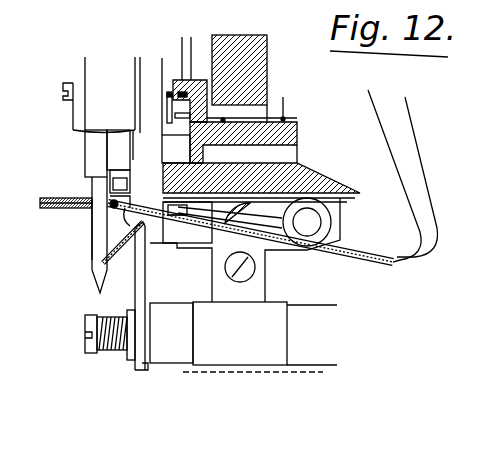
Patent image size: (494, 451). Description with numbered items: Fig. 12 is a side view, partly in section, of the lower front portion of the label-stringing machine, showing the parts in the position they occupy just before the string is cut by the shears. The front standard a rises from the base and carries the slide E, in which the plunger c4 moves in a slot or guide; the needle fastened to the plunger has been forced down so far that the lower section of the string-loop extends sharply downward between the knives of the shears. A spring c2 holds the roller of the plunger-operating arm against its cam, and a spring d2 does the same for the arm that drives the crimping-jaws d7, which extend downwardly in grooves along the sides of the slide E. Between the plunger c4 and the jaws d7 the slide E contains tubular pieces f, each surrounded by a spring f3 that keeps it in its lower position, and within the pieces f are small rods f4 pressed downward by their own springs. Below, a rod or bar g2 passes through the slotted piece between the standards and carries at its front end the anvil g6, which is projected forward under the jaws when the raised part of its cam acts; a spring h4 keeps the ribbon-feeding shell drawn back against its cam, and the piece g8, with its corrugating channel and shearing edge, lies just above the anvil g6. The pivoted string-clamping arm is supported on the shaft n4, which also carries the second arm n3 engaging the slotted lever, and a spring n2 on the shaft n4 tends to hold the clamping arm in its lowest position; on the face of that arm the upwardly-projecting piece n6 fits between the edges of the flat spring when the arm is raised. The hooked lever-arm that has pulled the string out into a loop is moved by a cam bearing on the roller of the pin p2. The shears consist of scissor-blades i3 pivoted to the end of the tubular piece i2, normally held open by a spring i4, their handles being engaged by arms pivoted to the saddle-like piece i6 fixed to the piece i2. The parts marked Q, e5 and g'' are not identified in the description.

The slide E is at (117, 96).
The spring c2 is at (80, 118).
The crimping-jaws d7 is at (165, 68).
The spring h4 is at (167, 132).
The plunger c4 is at (96, 211).
The tubular pieces f is at (120, 150).
The small rods f4 is at (129, 181).
The spring f3 is at (129, 227).
The spring d2 is at (62, 208).
The work Q is at (58, 198).
The needle e5 is at (100, 233).
The anvil g6 is at (184, 121).
The standards a is at (262, 67).
The pin g'' is at (252, 103).
The piece g8 is at (297, 130).
The rod or bar g2 is at (247, 158).
The shaft n4 is at (190, 200).
The second arm n3 is at (248, 250).
The upwardly-projecting piece n6 is at (173, 220).
The spring n2 is at (307, 222).
The pin p2 is at (418, 180).
The scissor-blades i3 is at (146, 275).
The spring i4 is at (110, 317).
The tubular piece i2 is at (171, 333).
The saddle-like piece i6 is at (260, 337).